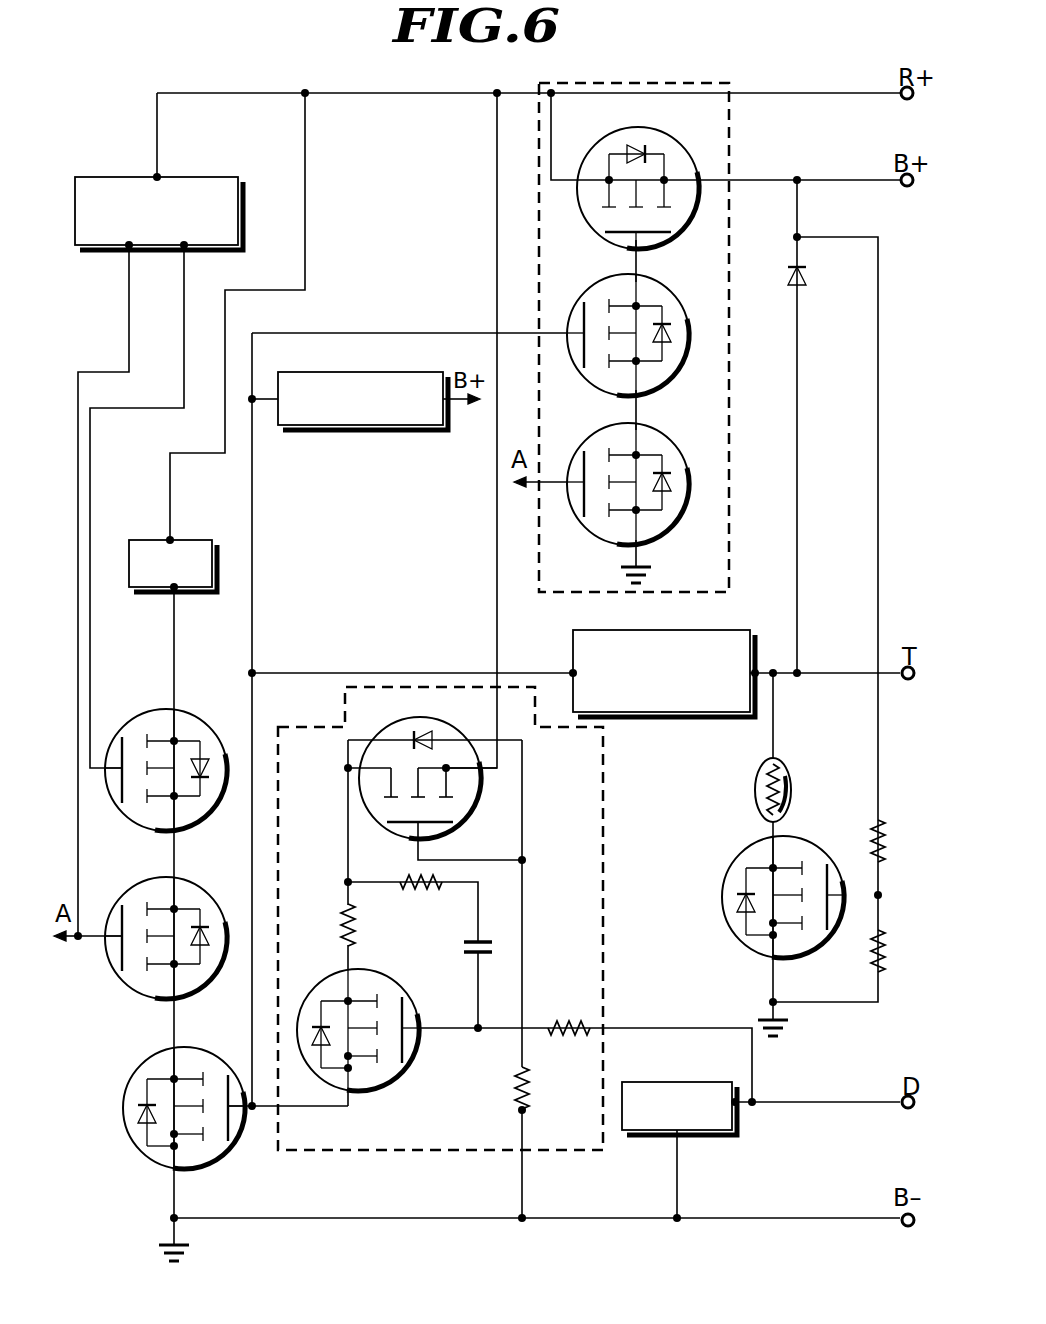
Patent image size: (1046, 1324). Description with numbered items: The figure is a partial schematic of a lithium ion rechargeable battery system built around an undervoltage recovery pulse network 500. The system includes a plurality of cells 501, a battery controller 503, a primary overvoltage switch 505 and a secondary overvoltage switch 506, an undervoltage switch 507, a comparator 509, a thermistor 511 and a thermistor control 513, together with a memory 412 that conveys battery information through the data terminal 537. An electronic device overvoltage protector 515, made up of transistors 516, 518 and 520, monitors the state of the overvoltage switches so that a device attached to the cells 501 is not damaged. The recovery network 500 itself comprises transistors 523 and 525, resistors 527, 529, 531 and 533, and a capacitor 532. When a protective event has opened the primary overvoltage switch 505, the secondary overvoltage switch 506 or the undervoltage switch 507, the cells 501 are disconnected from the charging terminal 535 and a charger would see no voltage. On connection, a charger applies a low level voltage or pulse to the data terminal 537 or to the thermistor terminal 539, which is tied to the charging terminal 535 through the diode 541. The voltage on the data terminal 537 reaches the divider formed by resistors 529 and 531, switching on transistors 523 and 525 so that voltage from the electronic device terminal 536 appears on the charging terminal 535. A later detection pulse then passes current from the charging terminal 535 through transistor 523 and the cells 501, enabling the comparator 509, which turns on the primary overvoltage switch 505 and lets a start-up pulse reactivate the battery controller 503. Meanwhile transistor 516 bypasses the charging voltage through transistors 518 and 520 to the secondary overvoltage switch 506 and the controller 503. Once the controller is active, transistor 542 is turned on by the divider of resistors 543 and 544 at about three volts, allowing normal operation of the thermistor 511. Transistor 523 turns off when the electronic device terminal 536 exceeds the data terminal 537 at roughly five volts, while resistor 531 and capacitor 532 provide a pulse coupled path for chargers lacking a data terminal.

The memory 412 is at (703, 1140).
The undervoltage recovery pulse network 500 is at (373, 1153).
The cells 501 is at (188, 540).
The battery controller 503 is at (128, 173).
The primary overvoltage switch 505 is at (123, 1072).
The secondary overvoltage switch 506 is at (192, 880).
The undervoltage switch 507 is at (190, 712).
The comparator 509 is at (342, 428).
The thermistor 511 is at (793, 773).
The thermistor control 513 is at (663, 715).
The electronic device overvoltage protector 515 is at (682, 82).
The transistor 516 is at (670, 245).
The transistor 518 is at (670, 393).
The transistor 520 is at (670, 535).
The transistor 523 is at (407, 713).
The transistor 525 is at (403, 1078).
The resistor 527 is at (505, 1093).
The resistor 529 is at (555, 1008).
The resistor 531 is at (447, 877).
The capacitor 532 is at (462, 953).
The resistor 533 is at (338, 913).
The charging terminal 535 is at (892, 173).
The electronic device terminal 536 is at (892, 90).
The data terminal 537 is at (898, 1093).
The thermistor terminal 539 is at (898, 664).
The diode 541 is at (815, 288).
The transistor 542 is at (717, 888).
The resistor 543 is at (855, 838).
The resistor 544 is at (867, 943).